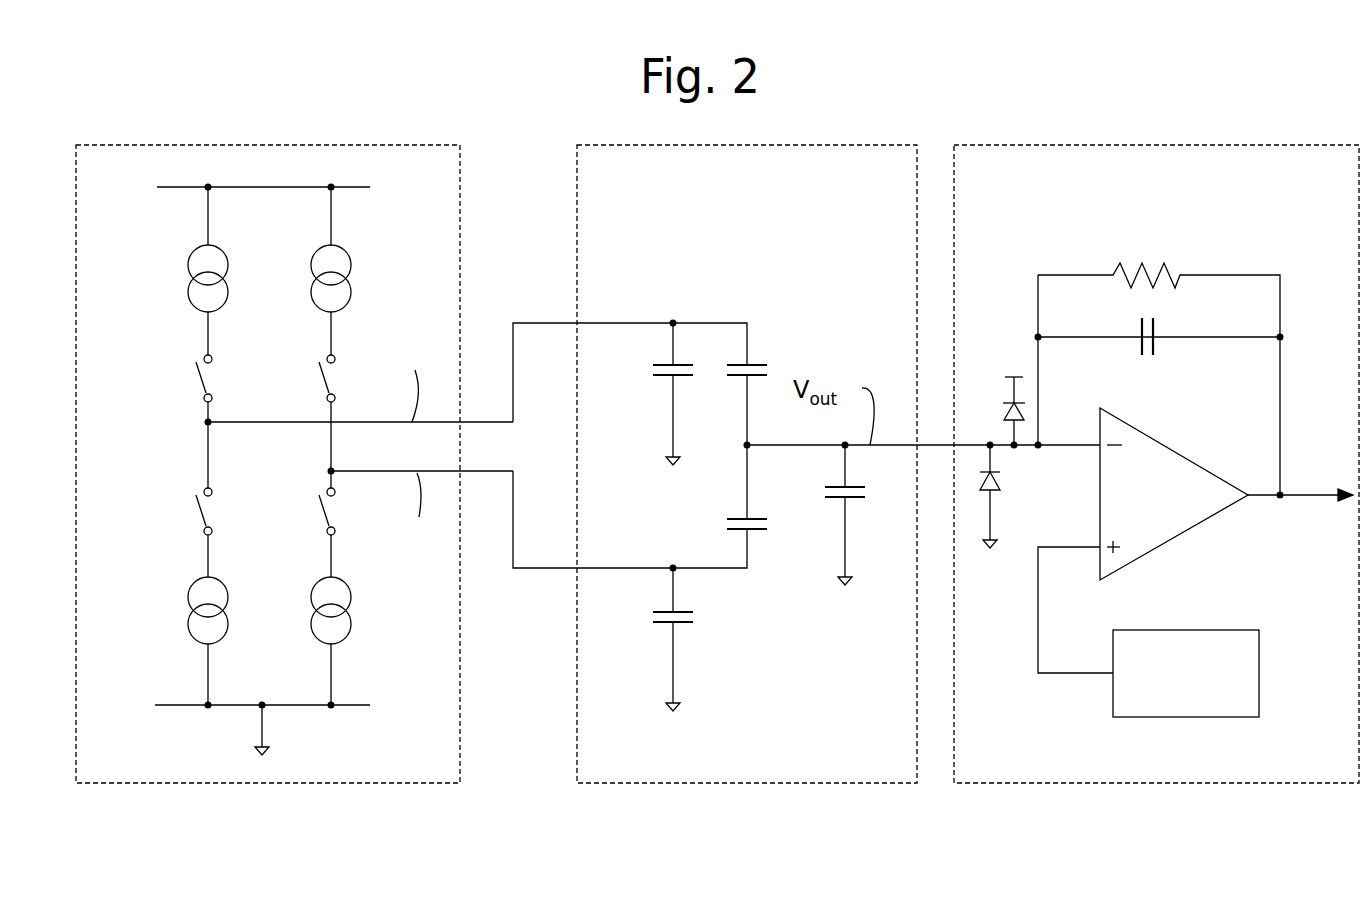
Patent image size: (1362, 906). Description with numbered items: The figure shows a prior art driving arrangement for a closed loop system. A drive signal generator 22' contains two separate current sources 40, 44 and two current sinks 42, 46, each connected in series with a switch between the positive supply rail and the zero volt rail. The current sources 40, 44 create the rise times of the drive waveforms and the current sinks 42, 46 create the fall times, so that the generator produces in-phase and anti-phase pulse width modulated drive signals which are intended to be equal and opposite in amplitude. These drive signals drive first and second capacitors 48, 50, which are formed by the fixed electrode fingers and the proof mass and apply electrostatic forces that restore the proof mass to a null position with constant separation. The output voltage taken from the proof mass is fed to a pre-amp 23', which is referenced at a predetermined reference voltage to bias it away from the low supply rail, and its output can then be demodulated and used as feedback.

The current source 40 is at (195, 252).
The current source 44 is at (347, 252).
The current sink 42 is at (195, 587).
The current sink 46 is at (318, 587).
The first capacitor 48 is at (757, 364).
The second capacitor 50 is at (757, 530).
The drive signal generator 22' is at (294, 508).
The pre-amp 23' is at (1156, 508).